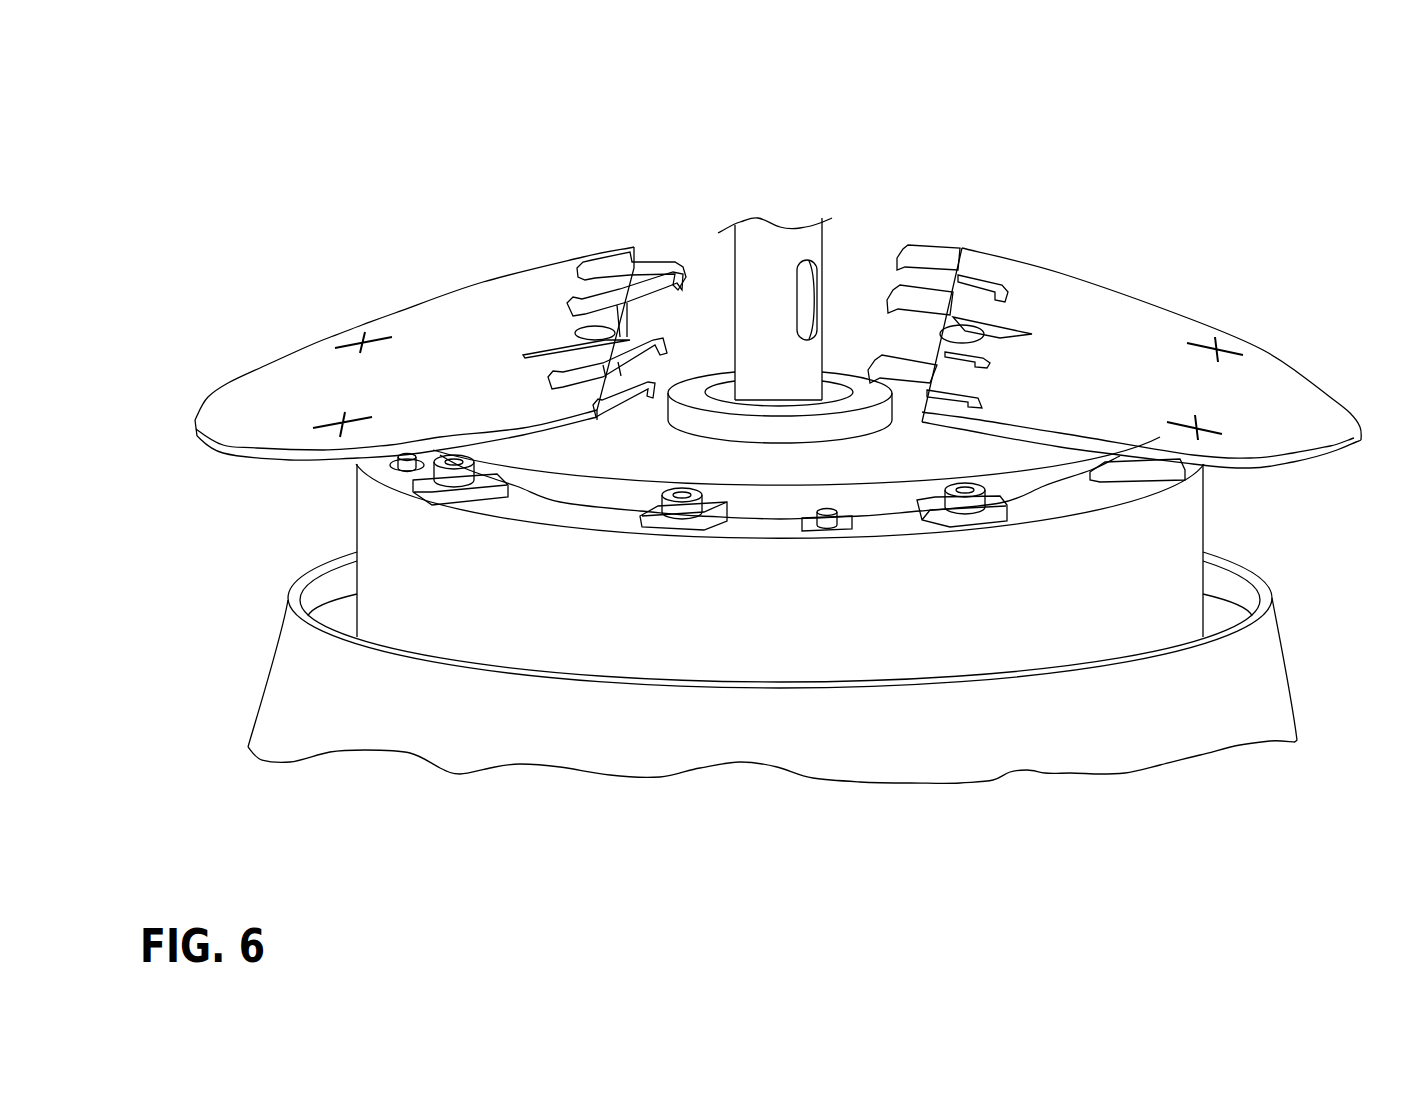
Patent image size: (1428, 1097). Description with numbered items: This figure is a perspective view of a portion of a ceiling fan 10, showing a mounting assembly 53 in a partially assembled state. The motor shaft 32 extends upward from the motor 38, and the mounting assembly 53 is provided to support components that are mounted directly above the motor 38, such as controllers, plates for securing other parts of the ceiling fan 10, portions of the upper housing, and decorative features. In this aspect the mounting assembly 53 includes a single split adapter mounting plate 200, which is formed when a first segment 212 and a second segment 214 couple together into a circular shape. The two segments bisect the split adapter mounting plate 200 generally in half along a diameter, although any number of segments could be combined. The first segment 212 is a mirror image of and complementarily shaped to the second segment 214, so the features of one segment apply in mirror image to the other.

The ceiling fan 10 is at (453, 68).
The motor shaft 32 is at (803, 242).
The motor 38 is at (1160, 538).
The mounting assembly 53 is at (485, 276).
The split adapter mounting plate 200 is at (889, 242).
The first segment 212 is at (1118, 322).
The second segment 214 is at (305, 366).